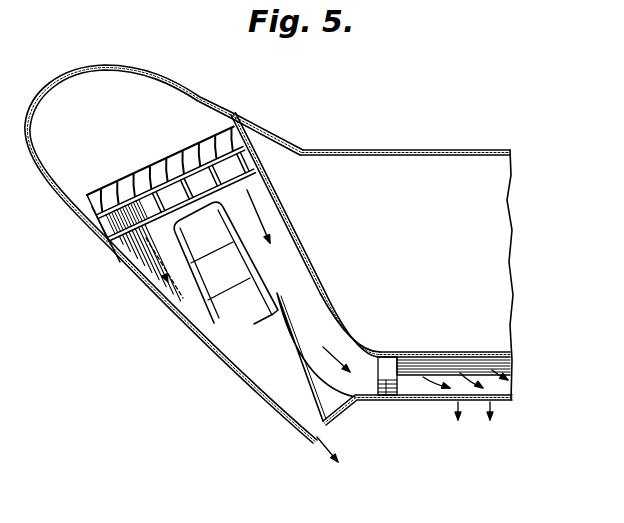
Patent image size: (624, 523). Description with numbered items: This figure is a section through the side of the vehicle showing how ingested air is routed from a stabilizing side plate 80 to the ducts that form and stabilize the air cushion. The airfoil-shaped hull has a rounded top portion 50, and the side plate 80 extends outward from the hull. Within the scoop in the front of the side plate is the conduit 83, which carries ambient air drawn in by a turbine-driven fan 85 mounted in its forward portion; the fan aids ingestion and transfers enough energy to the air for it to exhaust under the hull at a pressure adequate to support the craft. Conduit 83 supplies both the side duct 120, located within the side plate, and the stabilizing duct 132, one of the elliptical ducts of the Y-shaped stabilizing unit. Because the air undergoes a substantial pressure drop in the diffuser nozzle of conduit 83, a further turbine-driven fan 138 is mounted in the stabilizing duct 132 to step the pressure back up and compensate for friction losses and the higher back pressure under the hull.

The stabilizing side plate 80 is at (113, 65).
The rounded top portion 50 is at (441, 150).
The conduit 83 is at (174, 299).
The turbine-driven fan 85 is at (232, 312).
The side duct 120 is at (315, 443).
The stabilizing duct 132 is at (472, 370).
The turbine-driven fan 138 is at (387, 397).